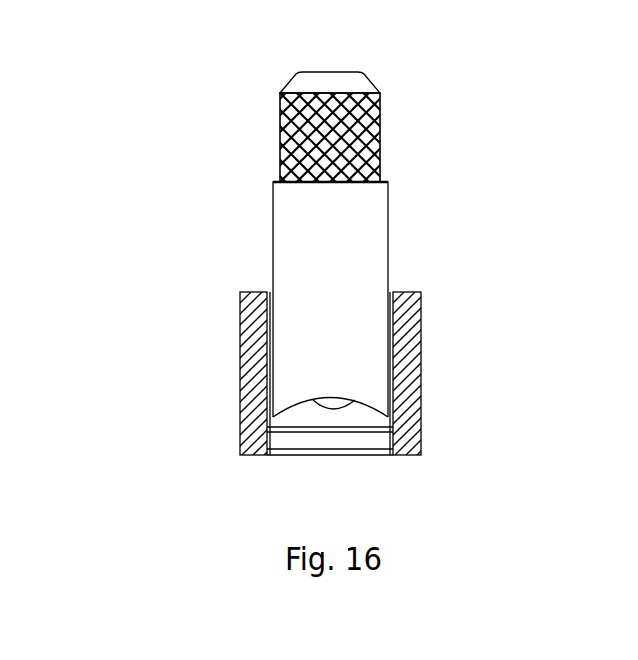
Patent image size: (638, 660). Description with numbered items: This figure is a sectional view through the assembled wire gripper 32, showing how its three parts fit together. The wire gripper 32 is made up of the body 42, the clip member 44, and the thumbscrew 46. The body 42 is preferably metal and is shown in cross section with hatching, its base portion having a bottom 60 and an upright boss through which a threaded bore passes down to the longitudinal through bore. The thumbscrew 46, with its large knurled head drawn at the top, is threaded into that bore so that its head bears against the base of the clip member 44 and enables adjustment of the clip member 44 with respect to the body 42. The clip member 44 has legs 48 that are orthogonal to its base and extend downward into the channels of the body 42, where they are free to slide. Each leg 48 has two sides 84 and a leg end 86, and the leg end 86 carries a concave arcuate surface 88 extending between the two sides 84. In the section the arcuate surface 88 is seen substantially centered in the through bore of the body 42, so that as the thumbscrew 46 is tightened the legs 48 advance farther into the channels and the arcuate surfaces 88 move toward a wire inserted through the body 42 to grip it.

The wire gripper 32 is at (130, 93).
The thumbscrew 46 is at (380, 136).
The clip member 44 is at (388, 218).
The legs 48 is at (338, 250).
The sides 84 is at (272, 280).
The body 42 is at (400, 419).
The bottom 60 is at (330, 398).
The leg ends 86 is at (273, 418).
The arcuate surface 88 is at (363, 418).